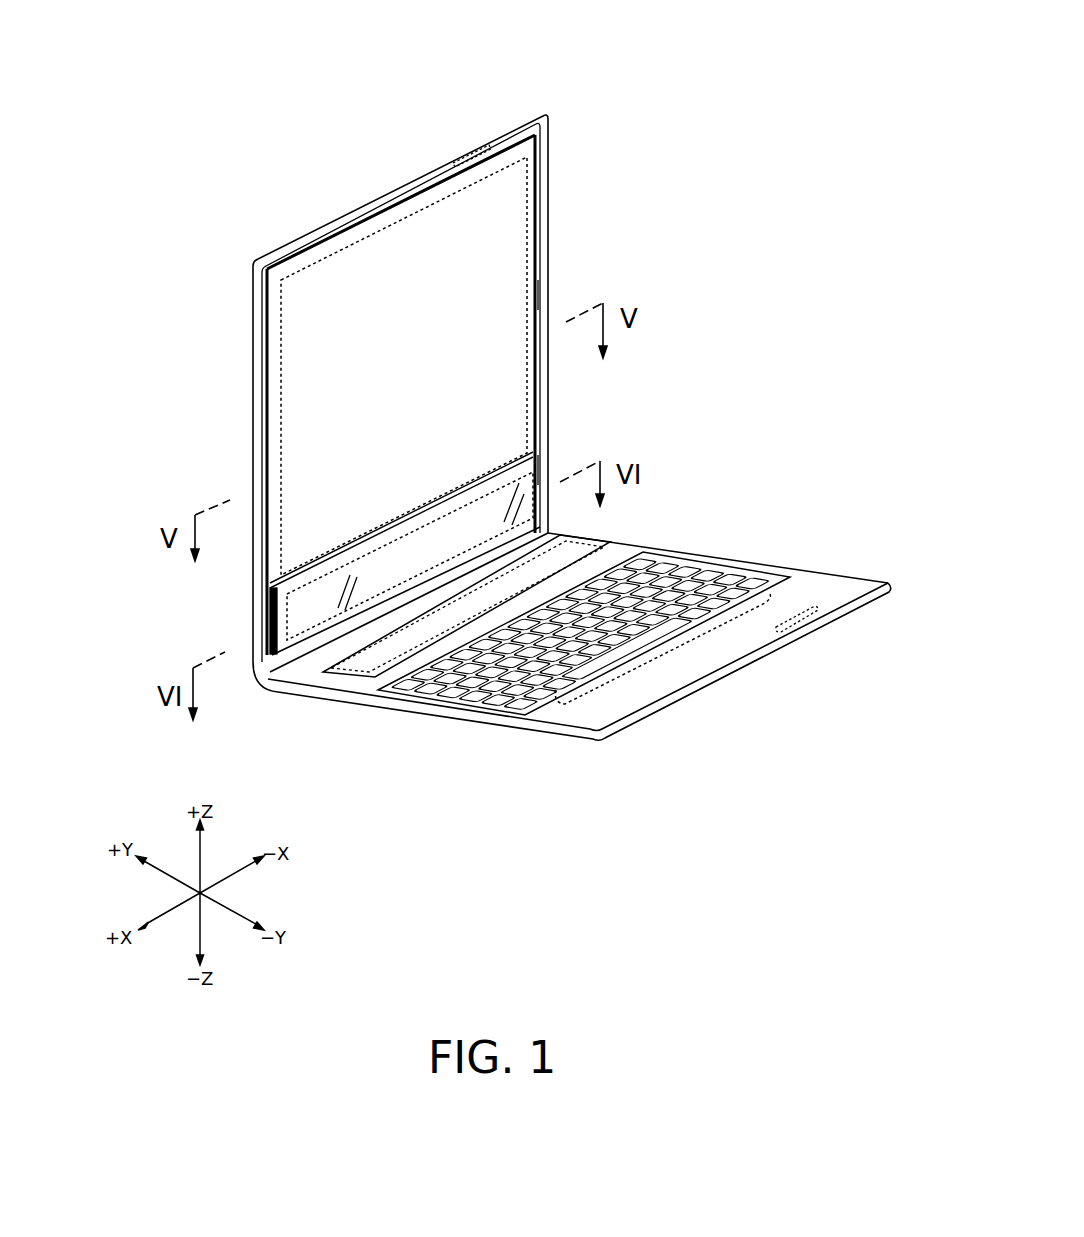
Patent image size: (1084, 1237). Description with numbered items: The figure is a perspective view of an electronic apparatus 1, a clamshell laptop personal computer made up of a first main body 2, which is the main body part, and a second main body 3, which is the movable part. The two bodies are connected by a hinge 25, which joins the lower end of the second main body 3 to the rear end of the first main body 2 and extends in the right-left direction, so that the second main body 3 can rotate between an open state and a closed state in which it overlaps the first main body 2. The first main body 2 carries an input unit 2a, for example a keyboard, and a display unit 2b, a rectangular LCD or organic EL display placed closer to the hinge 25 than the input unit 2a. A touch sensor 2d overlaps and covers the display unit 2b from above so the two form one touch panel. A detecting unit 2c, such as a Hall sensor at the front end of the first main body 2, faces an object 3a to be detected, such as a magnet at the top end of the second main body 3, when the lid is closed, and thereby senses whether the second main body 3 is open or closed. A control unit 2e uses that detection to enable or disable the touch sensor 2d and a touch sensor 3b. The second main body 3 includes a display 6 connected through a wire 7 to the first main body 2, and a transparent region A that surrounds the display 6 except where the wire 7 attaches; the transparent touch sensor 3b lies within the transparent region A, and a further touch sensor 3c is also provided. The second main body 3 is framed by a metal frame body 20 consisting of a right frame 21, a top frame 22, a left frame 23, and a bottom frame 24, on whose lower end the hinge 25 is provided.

The electronic apparatus 1 is at (207, 160).
The first main body 2 is at (523, 735).
The input unit 2a is at (672, 562).
The display unit 2b is at (595, 548).
The detecting unit 2c is at (818, 627).
The touch sensor 2d is at (594, 546).
The control unit 2e is at (650, 662).
The second main body 3 is at (238, 407).
The object to be detected 3a is at (470, 145).
The touch sensor 3b is at (540, 470).
The touch sensor 3c is at (532, 293).
The display 6 is at (515, 248).
The wire 7 is at (275, 617).
The frame body 20 is at (539, 105).
The right frame 21 is at (548, 167).
The top frame 22 is at (398, 192).
The left frame 23 is at (257, 330).
The bottom frame 24 is at (440, 580).
The hinge 25 is at (538, 530).
The transparent region A is at (306, 598).